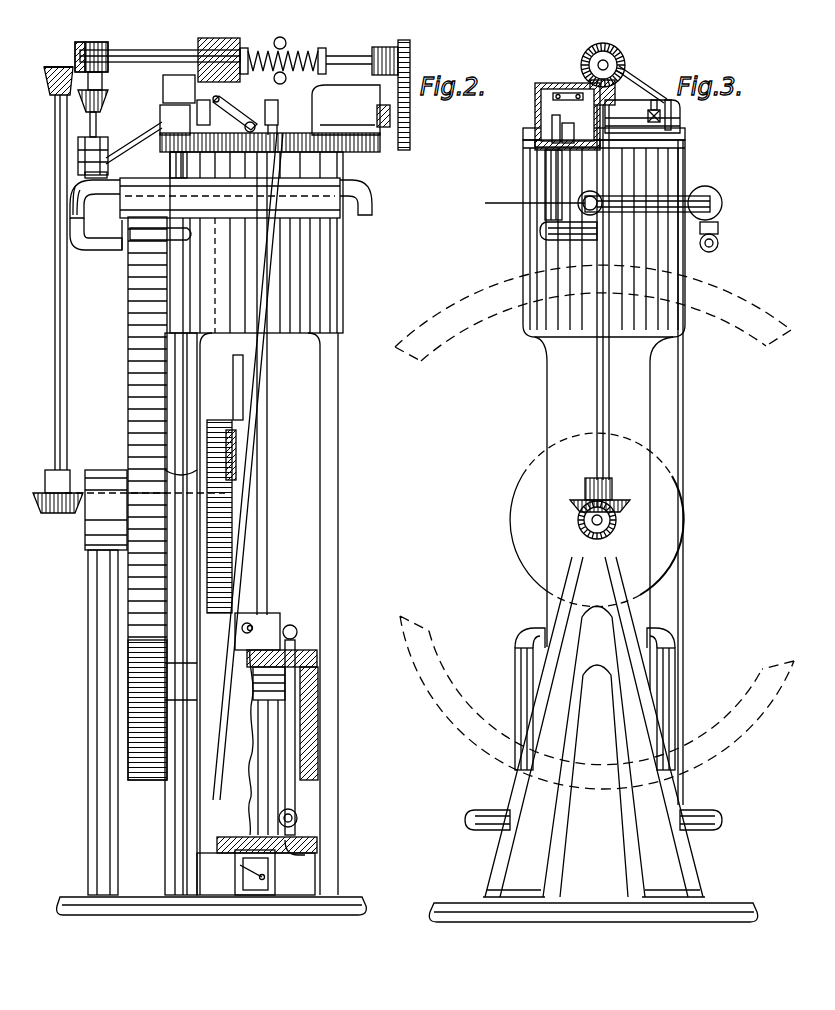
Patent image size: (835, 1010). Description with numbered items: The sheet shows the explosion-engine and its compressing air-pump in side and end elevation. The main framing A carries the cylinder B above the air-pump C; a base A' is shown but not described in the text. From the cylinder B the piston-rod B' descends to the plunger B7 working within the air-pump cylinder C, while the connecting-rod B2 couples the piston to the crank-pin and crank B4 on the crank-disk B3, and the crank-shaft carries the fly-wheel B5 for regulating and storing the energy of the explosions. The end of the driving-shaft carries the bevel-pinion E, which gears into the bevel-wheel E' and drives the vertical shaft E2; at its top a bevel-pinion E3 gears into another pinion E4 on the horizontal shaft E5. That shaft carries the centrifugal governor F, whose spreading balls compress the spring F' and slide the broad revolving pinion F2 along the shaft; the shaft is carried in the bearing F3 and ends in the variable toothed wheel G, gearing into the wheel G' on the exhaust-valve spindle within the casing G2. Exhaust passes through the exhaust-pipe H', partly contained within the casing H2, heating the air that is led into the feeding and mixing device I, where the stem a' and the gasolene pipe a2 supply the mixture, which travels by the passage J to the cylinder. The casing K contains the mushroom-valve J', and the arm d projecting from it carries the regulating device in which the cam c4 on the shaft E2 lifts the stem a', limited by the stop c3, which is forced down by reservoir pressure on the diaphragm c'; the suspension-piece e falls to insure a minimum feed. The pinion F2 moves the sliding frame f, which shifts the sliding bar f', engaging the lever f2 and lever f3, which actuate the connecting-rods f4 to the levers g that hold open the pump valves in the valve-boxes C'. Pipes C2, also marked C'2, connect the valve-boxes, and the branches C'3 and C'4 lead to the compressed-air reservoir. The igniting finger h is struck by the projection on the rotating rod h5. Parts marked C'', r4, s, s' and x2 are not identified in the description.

In FIG. 2, the main framing A is at (209, 624).
In FIG. 3, the main framing A is at (593, 644).
In FIG. 2, the base plate A' is at (146, 924).
In FIG. 2, the cylinder B is at (270, 233).
In FIG. 3, the cylinder B is at (604, 232).
In FIG. 2, the piston-rod B' is at (277, 383).
In FIG. 2, the connecting-rod B2 is at (234, 360).
In FIG. 2, the crank-disk B3 is at (216, 517).
In FIG. 3, the crank-disk B3 is at (597, 520).
In FIG. 2, the crank-pin and crank B4 is at (238, 450).
In FIG. 2, the fly-wheel B5 is at (138, 381).
In FIG. 3, the fly-wheel B5 is at (735, 308).
In FIG. 2, the plunger B7 is at (280, 668).
In FIG. 2, the compressing air-pump C is at (262, 742).
In FIG. 2, the valve-boxes C' is at (241, 872).
In FIG. 2, the piston head C'' is at (257, 631).
In FIG. 2, the pipes C2 is at (318, 846).
In FIG. 2, the pipes C'2 is at (328, 730).
In FIG. 3, the pipes C'2 is at (594, 699).
In FIG. 2, the branch C'3 is at (326, 811).
In FIG. 3, the branch C'3 is at (715, 812).
In FIG. 3, the branch C'4 is at (471, 814).
In FIG. 2, the bevel-pinion E is at (133, 510).
In FIG. 3, the bevel-pinion E is at (569, 521).
In FIG. 2, the bevel-wheel E' is at (44, 498).
In FIG. 3, the bevel-wheel E' is at (570, 512).
In FIG. 2, the vertical shaft E2 is at (55, 407).
In FIG. 3, the vertical shaft E2 is at (597, 385).
In FIG. 2, the bevel-pinion E3 is at (50, 70).
In FIG. 3, the bevel-pinion E3 is at (590, 82).
In FIG. 2, the pinion E4 is at (82, 42).
In FIG. 3, the pinion E4 is at (592, 53).
In FIG. 2, the horizontal shaft E5 is at (125, 58).
In FIG. 2, the centrifugal governor F is at (306, 46).
In FIG. 2, the spring F' is at (281, 50).
In FIG. 2, the broad revolving pinion F2 is at (218, 38).
In FIG. 2, the bearing F3 is at (383, 48).
In FIG. 2, the variable toothed wheel G is at (420, 94).
In FIG. 2, the variable toothed wheel G' is at (373, 114).
In FIG. 2, the casing G2 is at (347, 115).
In FIG. 3, the casing G2 is at (633, 102).
In FIG. 2, the exhaust-pipe H' is at (240, 232).
In FIG. 2, the casing H2 is at (230, 198).
In FIG. 3, the casing H2 is at (722, 204).
In FIG. 2, the feeding and mixing device I is at (60, 206).
In FIG. 2, the passage J is at (167, 165).
In FIG. 3, the passage J is at (547, 195).
In FIG. 2, the mushroom-valve J' is at (94, 234).
In FIG. 3, the mushroom-valve J' is at (544, 153).
In FIG. 2, the casing K is at (177, 105).
In FIG. 3, the casing K is at (545, 97).
In FIG. 2, the stem a' is at (101, 175).
In FIG. 3, the pipe a2 is at (523, 207).
In FIG. 2, the flexible diaphragm c' is at (213, 765).
In FIG. 2, the stop c3 is at (96, 128).
In FIG. 2, the cam c4 is at (78, 156).
In FIG. 2, the arm d is at (131, 142).
In FIG. 2, the suspension-piece e is at (86, 124).
In FIG. 2, the sliding frame f is at (236, 106).
In FIG. 3, the sliding frame f is at (641, 83).
In FIG. 2, the sliding bar f' is at (210, 96).
In FIG. 3, the sliding bar f' is at (660, 107).
In FIG. 2, the lever f2 is at (263, 124).
In FIG. 3, the lever f2 is at (673, 124).
In FIG. 2, the lever f3 is at (277, 136).
In FIG. 2, the connecting-rods f4 is at (243, 500).
In FIG. 3, the connecting-rods f4 is at (683, 413).
In FIG. 2, the levers g is at (256, 625).
In FIG. 3, the pivoted finger h is at (552, 112).
In FIG. 2, the rotating rod h5 is at (255, 45).
In FIG. 2, the rod r4 is at (232, 700).
In FIG. 2, the valve lever s is at (234, 915).
In FIG. 2, the valve stem s' is at (271, 919).
In FIG. 2, the rod x2 is at (237, 803).